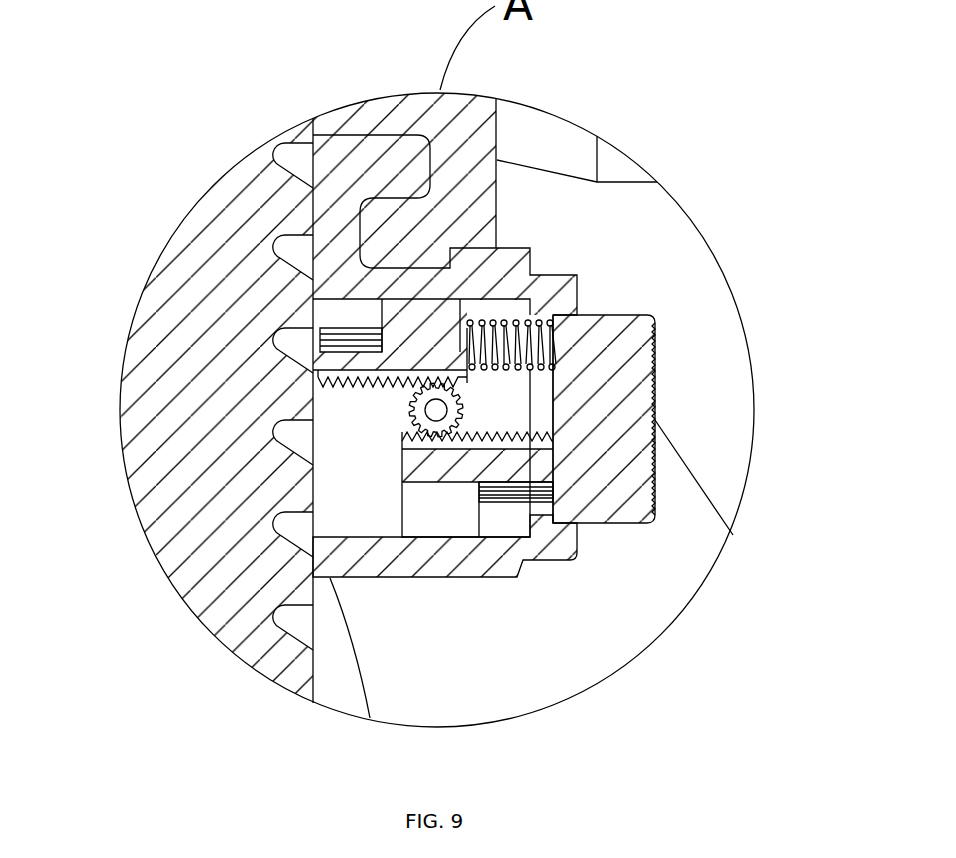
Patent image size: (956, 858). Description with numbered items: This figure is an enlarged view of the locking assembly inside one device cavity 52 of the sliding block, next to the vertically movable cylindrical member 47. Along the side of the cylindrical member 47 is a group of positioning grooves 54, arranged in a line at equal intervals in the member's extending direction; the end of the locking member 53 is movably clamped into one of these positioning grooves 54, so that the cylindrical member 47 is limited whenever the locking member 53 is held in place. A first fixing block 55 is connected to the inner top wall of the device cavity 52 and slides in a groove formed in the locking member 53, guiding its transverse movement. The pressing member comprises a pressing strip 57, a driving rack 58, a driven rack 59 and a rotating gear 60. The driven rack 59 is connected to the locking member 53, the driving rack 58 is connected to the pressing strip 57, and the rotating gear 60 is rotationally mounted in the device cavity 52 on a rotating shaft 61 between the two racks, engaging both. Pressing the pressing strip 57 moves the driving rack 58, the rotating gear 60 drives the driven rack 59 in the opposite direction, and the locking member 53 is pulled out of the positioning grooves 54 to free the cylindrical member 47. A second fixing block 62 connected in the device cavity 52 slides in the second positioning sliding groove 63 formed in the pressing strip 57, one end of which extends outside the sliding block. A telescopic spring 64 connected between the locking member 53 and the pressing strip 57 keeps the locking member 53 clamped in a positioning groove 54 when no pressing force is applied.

The cylindrical member 47 is at (173, 386).
The device cavity 52 is at (353, 497).
The locking member 53 is at (312, 347).
The positioning groove 54 is at (295, 153).
The first fixing block 55 is at (497, 248).
The pressing strip 57 is at (547, 463).
The driving rack 58 is at (547, 463).
The driven rack 59 is at (355, 383).
The rotating gear 60 is at (452, 411).
The rotating shaft 61 is at (440, 410).
The second fixing block 62 is at (313, 700).
The second positioning sliding groove 63 is at (500, 492).
The telescopic spring 64 is at (590, 322).